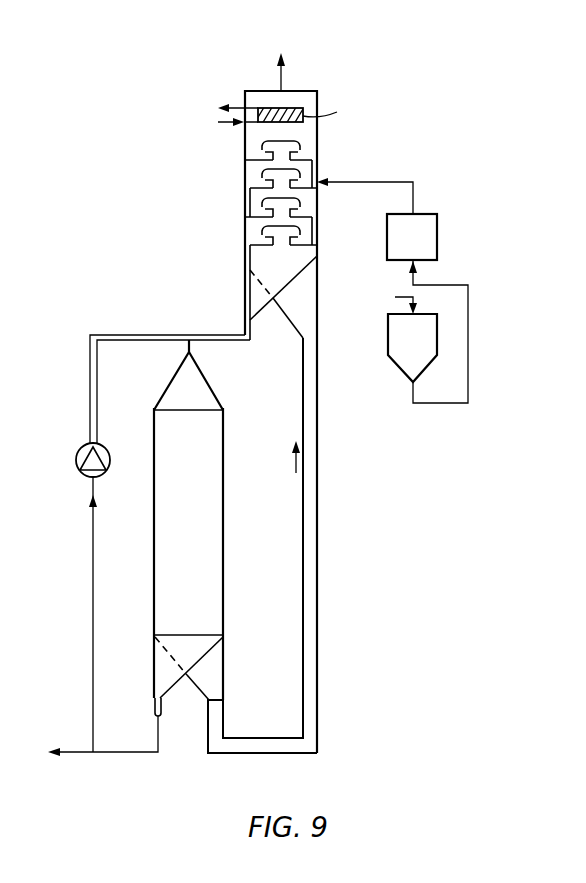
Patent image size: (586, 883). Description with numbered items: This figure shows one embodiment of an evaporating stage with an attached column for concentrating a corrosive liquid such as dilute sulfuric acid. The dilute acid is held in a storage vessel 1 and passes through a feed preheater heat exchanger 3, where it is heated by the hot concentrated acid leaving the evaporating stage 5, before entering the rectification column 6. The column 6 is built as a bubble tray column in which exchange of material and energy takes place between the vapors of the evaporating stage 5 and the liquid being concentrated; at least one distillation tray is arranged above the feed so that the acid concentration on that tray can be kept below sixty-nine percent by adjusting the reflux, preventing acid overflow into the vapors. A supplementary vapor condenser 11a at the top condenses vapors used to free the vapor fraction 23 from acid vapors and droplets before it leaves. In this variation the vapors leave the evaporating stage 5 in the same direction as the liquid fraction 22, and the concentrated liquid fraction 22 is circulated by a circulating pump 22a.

The storage vessel 1 is at (394, 342).
The feed preheater heat exchanger 3 is at (437, 237).
The evaporating stage 5 is at (216, 523).
The rectification column 6 is at (245, 200).
The supplementary vapor condenser 11a is at (357, 113).
The liquid fraction 22 is at (52, 773).
The circulating pump for liquid fraction 22a is at (78, 463).
The vapor fraction 23 is at (340, 60).